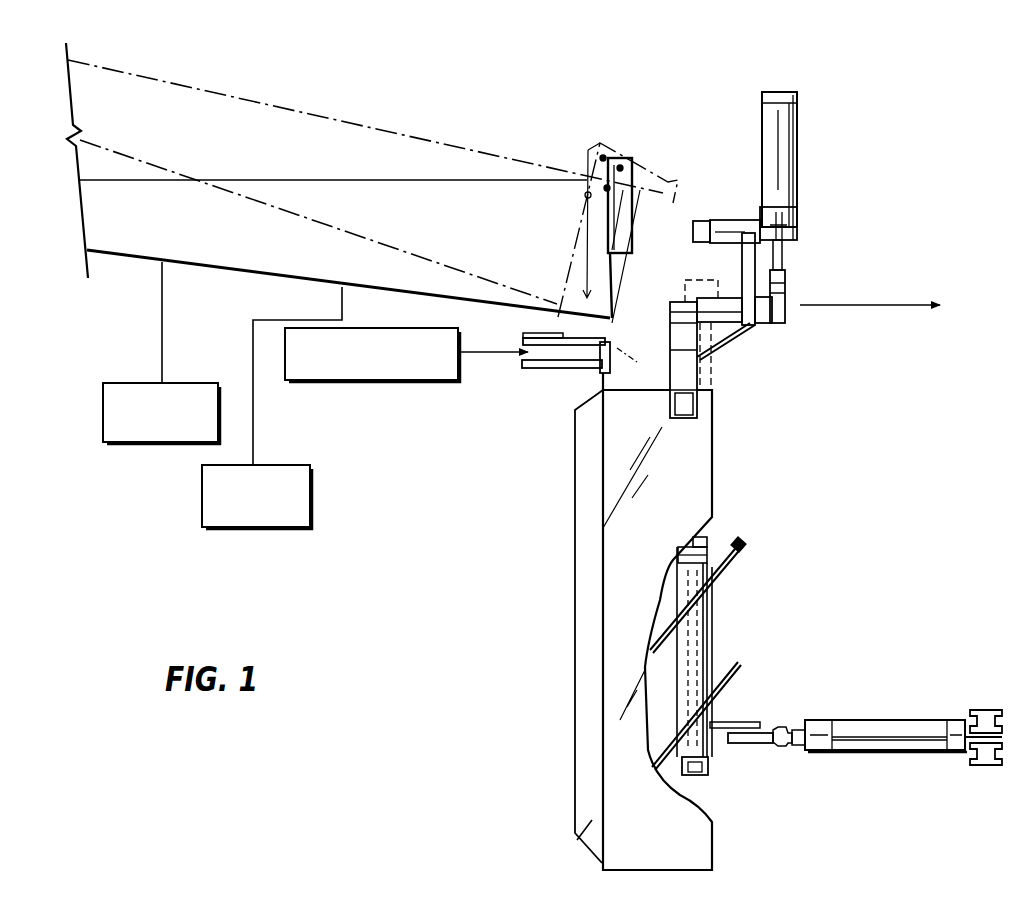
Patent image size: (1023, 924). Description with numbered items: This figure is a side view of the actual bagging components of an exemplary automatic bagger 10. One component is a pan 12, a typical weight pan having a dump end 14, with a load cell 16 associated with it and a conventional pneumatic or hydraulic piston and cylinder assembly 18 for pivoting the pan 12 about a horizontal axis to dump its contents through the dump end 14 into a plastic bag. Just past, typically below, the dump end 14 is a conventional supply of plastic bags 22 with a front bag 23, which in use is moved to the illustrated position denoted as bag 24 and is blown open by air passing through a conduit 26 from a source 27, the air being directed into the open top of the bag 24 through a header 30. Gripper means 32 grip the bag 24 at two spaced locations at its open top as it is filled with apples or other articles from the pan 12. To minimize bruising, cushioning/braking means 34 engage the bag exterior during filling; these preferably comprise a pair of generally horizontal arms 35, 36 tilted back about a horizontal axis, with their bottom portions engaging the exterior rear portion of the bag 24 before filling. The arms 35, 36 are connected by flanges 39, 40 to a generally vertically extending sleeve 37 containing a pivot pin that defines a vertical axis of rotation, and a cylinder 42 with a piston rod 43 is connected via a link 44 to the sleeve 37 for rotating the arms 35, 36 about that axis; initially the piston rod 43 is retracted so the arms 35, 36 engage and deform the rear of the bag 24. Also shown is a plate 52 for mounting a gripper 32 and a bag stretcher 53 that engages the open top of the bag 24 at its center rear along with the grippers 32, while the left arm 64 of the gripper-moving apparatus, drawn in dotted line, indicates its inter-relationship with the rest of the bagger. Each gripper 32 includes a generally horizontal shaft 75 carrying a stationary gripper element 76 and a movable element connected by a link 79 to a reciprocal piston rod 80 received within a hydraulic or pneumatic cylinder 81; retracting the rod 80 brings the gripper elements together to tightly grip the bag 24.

The automatic bagger 10 is at (722, 145).
The pan 12 is at (162, 243).
The dump end 14 is at (667, 225).
The load cell 16 is at (297, 517).
The piston and cylinder assembly 18 is at (137, 430).
The supply of plastic bags 22 is at (592, 820).
The front bag 23 is at (598, 862).
The bag 24 is at (700, 838).
The conduit 26 is at (545, 368).
The air source 27 is at (415, 375).
The header 30 is at (612, 344).
The gripper means 32 is at (762, 348).
The cushioning/braking means 34 is at (773, 553).
The arm 35 is at (723, 570).
The arm 36 is at (730, 697).
The sleeve 37 is at (712, 655).
The flange 39 is at (712, 590).
The flange 40 is at (710, 750).
The cylinder 42 is at (898, 745).
The piston rod 43 is at (783, 745).
The link 44 is at (732, 722).
The plate 52 is at (703, 385).
The bag stretcher 53 is at (718, 408).
The left arm 64 is at (683, 290).
The shaft 75 is at (743, 266).
The gripper element 76 is at (700, 375).
The link 79 is at (770, 325).
The piston rod 80 is at (785, 265).
The cylinder 81 is at (797, 140).